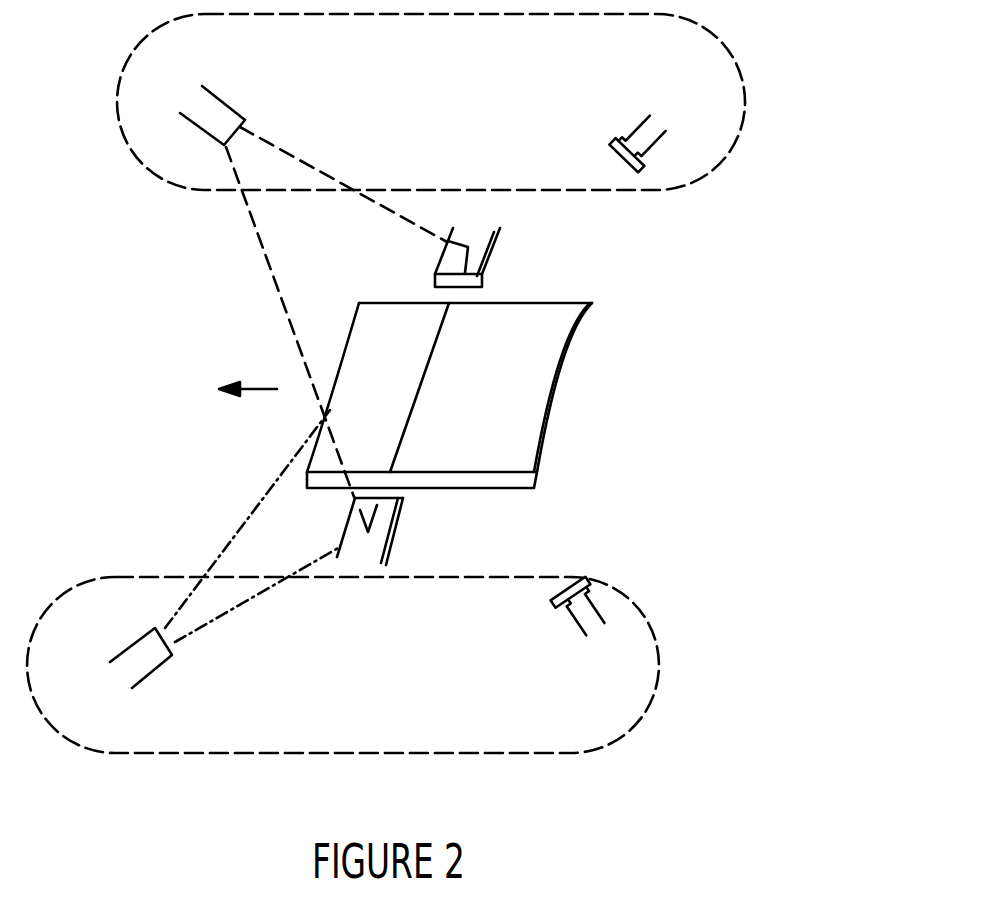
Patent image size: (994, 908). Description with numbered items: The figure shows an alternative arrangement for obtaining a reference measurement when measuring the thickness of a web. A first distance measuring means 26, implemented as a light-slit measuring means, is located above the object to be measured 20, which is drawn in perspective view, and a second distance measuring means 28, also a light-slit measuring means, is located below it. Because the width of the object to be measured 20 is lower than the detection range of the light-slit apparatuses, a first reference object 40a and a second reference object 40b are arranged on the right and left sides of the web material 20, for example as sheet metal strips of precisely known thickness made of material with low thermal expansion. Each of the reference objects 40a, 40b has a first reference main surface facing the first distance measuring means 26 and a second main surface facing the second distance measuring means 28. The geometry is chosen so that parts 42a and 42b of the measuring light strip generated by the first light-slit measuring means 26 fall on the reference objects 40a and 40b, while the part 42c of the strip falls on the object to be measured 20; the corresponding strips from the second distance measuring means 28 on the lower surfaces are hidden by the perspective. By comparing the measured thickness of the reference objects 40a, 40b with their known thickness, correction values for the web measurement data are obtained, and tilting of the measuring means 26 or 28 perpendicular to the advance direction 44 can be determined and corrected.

The object to be measured 20 is at (585, 326).
The first distance measuring means 26 is at (745, 112).
The second distance measuring means 28 is at (657, 685).
The first reference object 40a is at (472, 233).
The second reference object 40b is at (355, 550).
The part of the measuring light strip 42a is at (463, 266).
The part of the measuring light strip 42b is at (373, 508).
The part of the measuring light strip 42c is at (420, 385).
The advance direction 44 is at (267, 392).